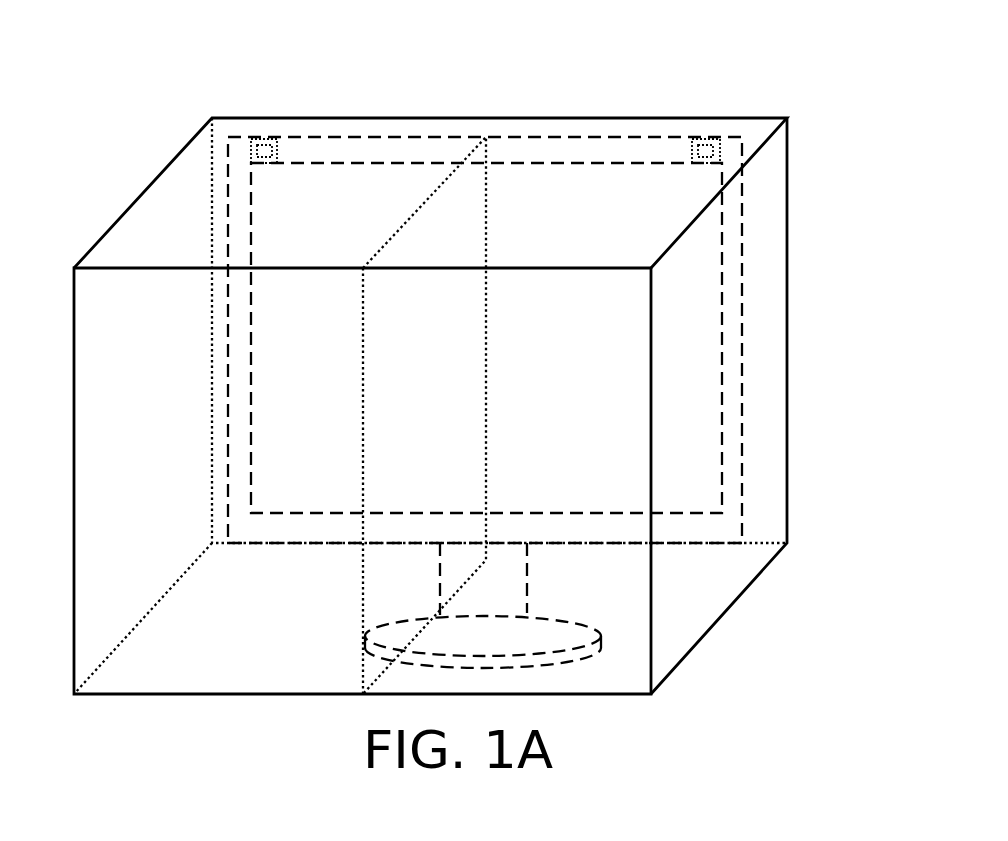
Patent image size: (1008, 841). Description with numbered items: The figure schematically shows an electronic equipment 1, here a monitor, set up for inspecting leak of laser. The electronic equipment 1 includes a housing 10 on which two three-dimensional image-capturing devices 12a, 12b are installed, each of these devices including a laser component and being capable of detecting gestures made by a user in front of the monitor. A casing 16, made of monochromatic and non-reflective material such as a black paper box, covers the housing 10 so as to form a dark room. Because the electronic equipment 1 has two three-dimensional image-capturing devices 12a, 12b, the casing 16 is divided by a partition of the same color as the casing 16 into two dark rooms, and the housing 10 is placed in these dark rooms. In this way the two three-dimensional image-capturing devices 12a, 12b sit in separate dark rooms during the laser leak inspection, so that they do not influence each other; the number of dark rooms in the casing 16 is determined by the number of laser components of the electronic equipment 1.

The electronic equipment 1 is at (491, 81).
The housing 10 is at (615, 153).
The three-dimensional image-capturing device 12a is at (268, 147).
The three-dimensional image-capturing device 12b is at (713, 148).
The casing 16 is at (788, 304).